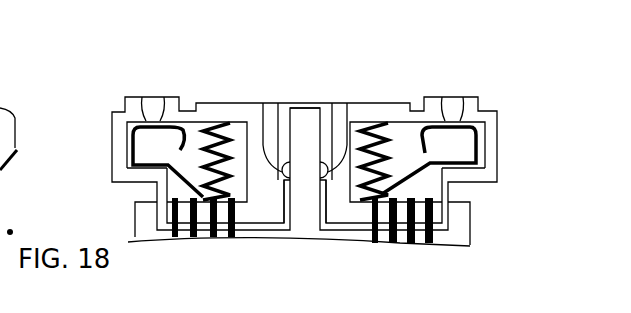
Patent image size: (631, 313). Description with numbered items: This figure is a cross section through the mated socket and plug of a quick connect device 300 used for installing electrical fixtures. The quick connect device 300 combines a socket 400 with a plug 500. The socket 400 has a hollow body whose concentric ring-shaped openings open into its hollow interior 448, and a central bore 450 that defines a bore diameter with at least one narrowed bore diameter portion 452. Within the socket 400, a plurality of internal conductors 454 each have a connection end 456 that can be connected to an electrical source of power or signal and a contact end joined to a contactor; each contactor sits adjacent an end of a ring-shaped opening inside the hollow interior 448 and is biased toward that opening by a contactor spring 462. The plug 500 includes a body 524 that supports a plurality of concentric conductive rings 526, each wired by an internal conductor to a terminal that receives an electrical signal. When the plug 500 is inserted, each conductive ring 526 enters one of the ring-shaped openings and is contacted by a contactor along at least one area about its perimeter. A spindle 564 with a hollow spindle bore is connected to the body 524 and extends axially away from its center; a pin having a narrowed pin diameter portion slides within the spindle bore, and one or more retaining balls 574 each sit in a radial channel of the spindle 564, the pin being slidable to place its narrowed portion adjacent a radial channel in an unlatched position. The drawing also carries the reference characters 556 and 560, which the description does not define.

The quick connect device 300 is at (147, 82).
The socket 400 is at (190, 87).
The hollow interior 448 is at (403, 135).
The central bore 450 is at (285, 101).
The narrowed bore diameter portion 452 is at (279, 195).
The internal conductors 454 is at (480, 128).
The connection end 456 is at (155, 135).
The contactor spring 462 is at (346, 149).
The plug 500 is at (128, 226).
The body 524 is at (470, 212).
The concentric conductive rings 526 is at (440, 238).
The spring arm 556 is at (192, 191).
The lower wall 560 is at (356, 195).
The spindle 564 is at (305, 107).
The retaining balls 574 is at (265, 102).